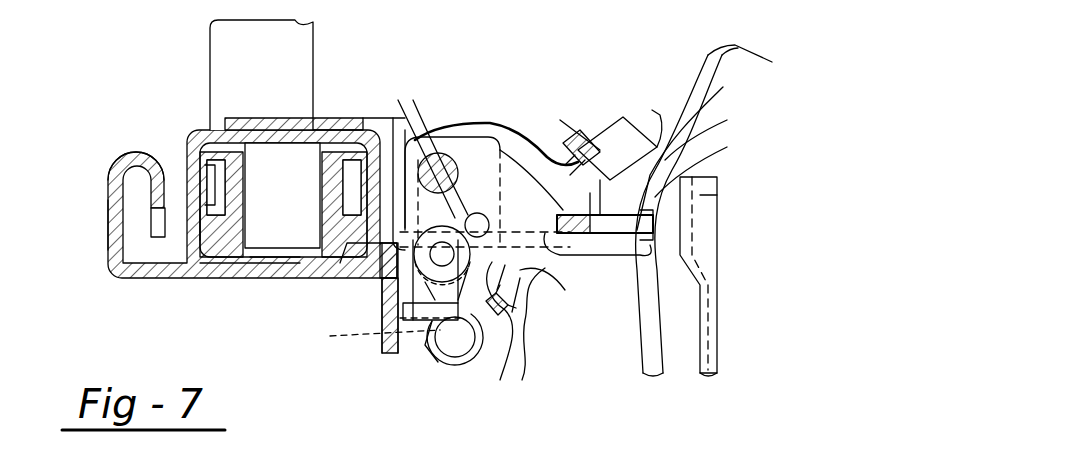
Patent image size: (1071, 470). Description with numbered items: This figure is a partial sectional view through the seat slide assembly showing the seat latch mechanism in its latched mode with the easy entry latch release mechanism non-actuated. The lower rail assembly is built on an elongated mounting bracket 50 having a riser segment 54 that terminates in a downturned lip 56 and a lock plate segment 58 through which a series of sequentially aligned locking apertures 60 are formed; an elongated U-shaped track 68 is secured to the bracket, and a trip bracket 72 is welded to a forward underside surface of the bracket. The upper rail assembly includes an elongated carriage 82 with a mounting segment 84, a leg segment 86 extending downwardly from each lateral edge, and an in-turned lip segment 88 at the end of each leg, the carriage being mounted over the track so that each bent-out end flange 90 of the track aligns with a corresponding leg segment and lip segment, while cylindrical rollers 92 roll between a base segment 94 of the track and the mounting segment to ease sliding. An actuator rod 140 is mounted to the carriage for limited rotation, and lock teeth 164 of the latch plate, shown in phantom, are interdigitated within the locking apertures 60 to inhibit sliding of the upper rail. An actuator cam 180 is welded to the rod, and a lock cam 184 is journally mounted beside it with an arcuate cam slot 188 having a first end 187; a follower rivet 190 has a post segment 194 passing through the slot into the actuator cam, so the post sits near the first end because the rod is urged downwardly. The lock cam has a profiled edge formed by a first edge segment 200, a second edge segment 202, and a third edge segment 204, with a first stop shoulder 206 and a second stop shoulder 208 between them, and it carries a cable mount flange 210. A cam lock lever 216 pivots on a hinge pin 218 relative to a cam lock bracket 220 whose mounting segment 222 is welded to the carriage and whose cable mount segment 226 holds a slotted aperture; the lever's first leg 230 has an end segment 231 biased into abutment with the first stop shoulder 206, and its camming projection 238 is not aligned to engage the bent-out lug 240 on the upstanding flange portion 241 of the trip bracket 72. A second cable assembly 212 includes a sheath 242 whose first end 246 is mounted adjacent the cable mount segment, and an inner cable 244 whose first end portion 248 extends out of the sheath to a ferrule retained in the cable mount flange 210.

The mounting bracket 50 is at (170, 290).
The riser segment 54 is at (108, 215).
The downturned lip 56 is at (125, 163).
The lock plate segment 58 is at (380, 345).
The locking apertures 60 is at (375, 262).
The U-shaped track 68 is at (250, 278).
The trip bracket 72 is at (722, 300).
The carriage 82 is at (255, 128).
The mounting segment 84 is at (222, 155).
The leg segment 86 is at (205, 165).
The in-turned lip segment 88 is at (205, 220).
The bent-out end flange 90 is at (210, 180).
The cylindrical rollers 92 is at (280, 192).
The base segment 94 is at (280, 280).
The actuator rod 140 is at (405, 112).
The lock teeth 164 is at (330, 336).
The actuator cam 180 is at (452, 135).
The lock cam 184 is at (470, 128).
The first end 187 is at (393, 122).
The arcuate cam slot 188 is at (412, 130).
The follower rivet 190 is at (400, 340).
The post segment 194 is at (320, 322).
The first edge segment 200 is at (701, 146).
The second edge segment 202 is at (530, 296).
The third edge segment 204 is at (502, 340).
The first stop shoulder 206 is at (512, 116).
The second stop shoulder 208 is at (525, 300).
The cable mount flange 210 is at (455, 360).
The second cable assembly 212 is at (665, 100).
The cam lock lever 216 is at (645, 255).
The hinge pin 218 is at (719, 126).
The cam lock bracket 220 is at (640, 345).
The mounting segment 222 is at (290, 122).
The cable mount segment 226 is at (573, 130).
The first leg 230 is at (610, 238).
The end segment 231 is at (470, 215).
The camming projection 238 is at (716, 163).
The bent-out lug 240 is at (717, 195).
The upstanding flange portion 241 is at (718, 360).
The sheath 242 is at (733, 38).
The inner cable 244 is at (570, 135).
The first end 246 is at (766, 57).
The first end portion 248 is at (510, 310).